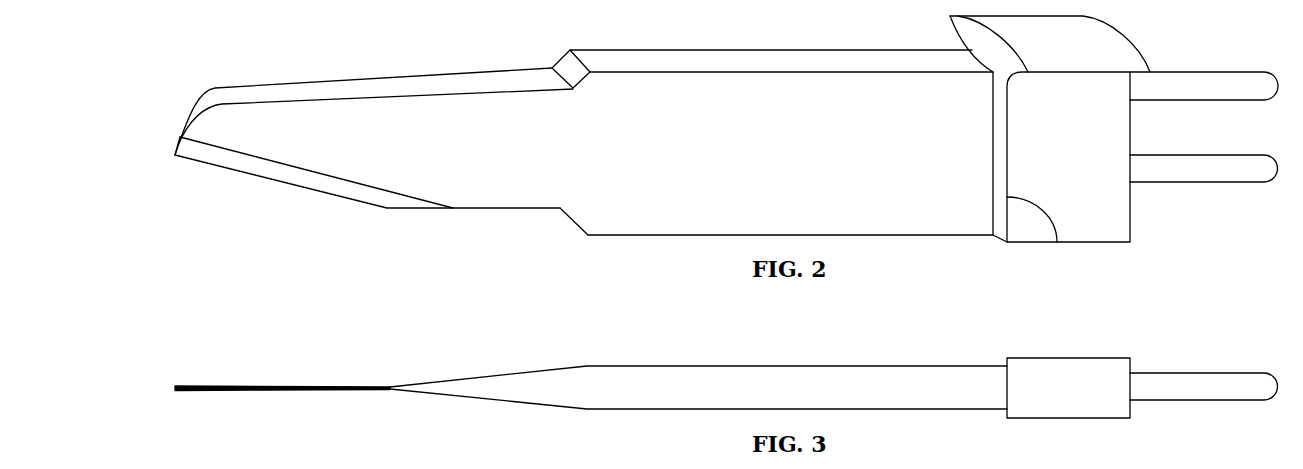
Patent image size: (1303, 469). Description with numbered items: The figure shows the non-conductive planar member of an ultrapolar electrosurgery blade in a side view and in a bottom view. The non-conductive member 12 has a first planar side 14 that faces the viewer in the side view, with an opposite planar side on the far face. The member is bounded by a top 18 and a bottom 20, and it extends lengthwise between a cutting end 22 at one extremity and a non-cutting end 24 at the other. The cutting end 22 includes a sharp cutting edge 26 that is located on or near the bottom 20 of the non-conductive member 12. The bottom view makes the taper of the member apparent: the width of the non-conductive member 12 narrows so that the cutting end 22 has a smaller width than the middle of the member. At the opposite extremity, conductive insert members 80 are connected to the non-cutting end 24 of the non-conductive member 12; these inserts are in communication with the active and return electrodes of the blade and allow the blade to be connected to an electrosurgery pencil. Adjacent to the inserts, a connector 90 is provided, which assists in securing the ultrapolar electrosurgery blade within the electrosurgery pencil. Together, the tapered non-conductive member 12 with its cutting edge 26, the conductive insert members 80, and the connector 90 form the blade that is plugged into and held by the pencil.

In FIG. 2, the non-conductive member 12 is at (537, 112).
In FIG. 3, the non-conductive member 12 is at (823, 380).
In FIG. 2, the first planar side 14 is at (731, 158).
In FIG. 2, the top 18 is at (668, 63).
In FIG. 2, the bottom 20 is at (657, 238).
In FIG. 3, the bottom 20 is at (726, 399).
In FIG. 2, the cutting end 22 is at (170, 154).
In FIG. 3, the cutting end 22 is at (170, 388).
In FIG. 2, the non-cutting end 24 is at (1052, 237).
In FIG. 2, the sharp cutting edge 26 is at (302, 192).
In FIG. 3, the sharp cutting edge 26 is at (268, 385).
In FIG. 2, the conductive insert members 80 is at (1207, 80).
In FIG. 3, the conductive insert members 80 is at (1202, 382).
In FIG. 2, the connector 90 is at (1092, 147).
In FIG. 3, the connector 90 is at (1067, 373).